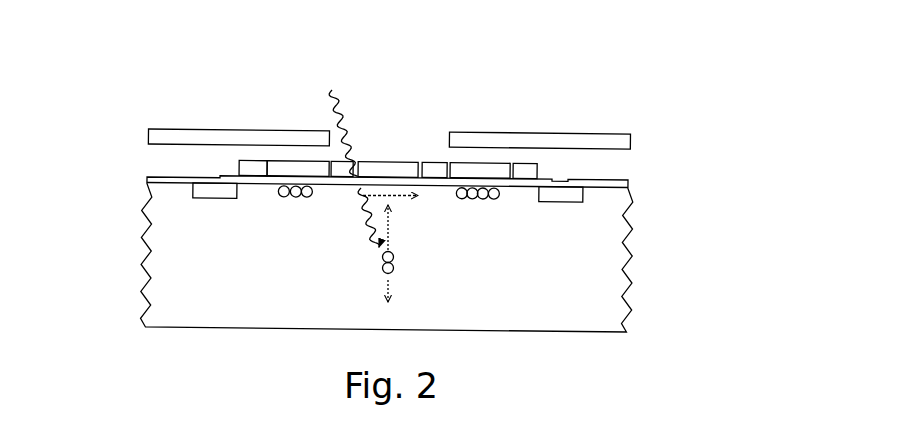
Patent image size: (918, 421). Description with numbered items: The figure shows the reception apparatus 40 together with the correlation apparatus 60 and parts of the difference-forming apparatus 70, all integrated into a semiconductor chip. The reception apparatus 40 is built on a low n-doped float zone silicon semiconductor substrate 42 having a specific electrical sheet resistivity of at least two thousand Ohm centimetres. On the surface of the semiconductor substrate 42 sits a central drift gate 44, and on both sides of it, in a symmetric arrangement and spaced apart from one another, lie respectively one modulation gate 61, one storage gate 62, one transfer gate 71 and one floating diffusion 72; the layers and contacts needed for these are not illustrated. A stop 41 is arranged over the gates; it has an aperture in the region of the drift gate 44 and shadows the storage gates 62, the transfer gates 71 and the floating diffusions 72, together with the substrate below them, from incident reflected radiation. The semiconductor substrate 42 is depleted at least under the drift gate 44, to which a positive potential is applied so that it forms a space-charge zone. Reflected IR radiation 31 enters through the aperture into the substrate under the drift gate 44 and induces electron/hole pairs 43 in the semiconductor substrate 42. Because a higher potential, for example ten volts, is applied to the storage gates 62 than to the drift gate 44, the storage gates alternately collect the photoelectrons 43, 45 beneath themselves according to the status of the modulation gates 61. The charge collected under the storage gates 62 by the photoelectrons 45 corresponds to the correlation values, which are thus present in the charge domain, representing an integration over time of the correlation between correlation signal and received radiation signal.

The reception apparatus 40 is at (370, 93).
The correlation apparatus 60 is at (132, 158).
The difference-forming apparatus 70 is at (645, 163).
The stop 41 is at (155, 136).
The semiconductor substrate 42 is at (612, 215).
The electron/hole pairs 43 is at (395, 263).
The drift gate 44 is at (383, 168).
The photoelectrons 45 is at (275, 196).
The modulation gate 61 is at (343, 170).
The storage gate 62 is at (297, 170).
The transfer gate 71 is at (252, 170).
The floating diffusion 72 is at (212, 192).
The reflected IR radiation 31 is at (363, 222).